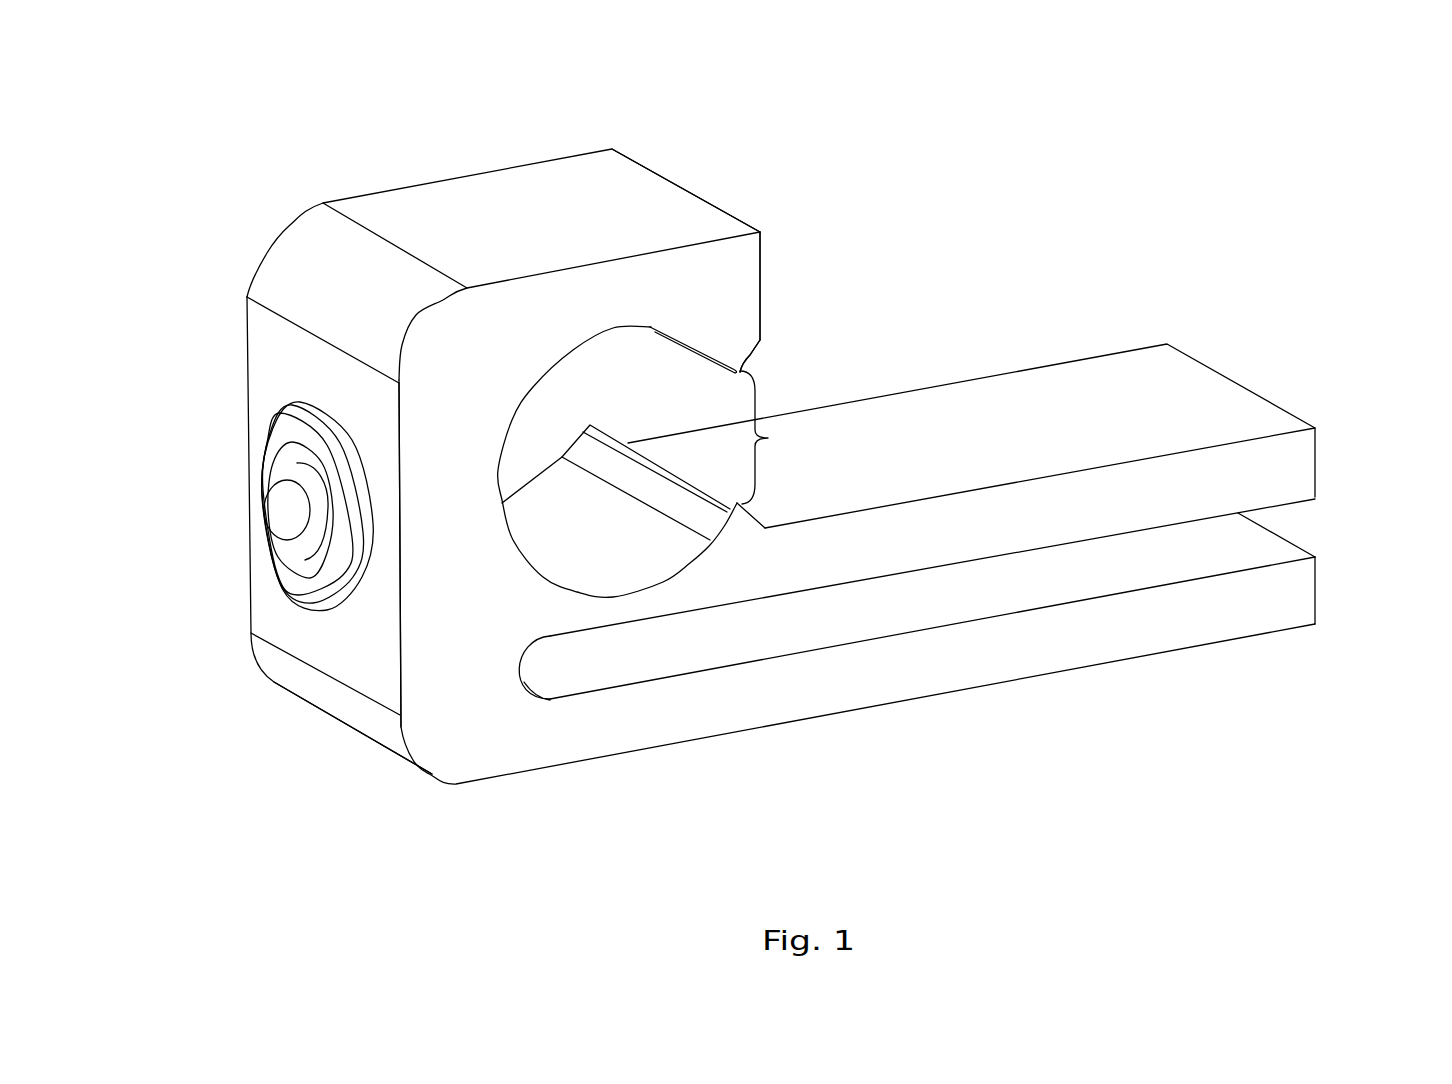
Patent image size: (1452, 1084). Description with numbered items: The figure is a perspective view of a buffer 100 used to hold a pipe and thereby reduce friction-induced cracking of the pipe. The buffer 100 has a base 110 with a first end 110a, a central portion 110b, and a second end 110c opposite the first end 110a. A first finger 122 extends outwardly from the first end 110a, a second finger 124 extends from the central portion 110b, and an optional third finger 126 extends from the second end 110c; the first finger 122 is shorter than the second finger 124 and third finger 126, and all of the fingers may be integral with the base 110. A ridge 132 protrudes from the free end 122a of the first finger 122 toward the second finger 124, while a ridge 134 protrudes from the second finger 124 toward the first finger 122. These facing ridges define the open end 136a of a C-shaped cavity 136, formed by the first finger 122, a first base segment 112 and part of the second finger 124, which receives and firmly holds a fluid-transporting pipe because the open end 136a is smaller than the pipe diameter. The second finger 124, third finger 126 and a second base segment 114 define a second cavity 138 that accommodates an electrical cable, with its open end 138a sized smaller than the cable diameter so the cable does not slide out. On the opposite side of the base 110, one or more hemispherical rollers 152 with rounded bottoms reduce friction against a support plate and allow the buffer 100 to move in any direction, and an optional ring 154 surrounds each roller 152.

The buffer 100 is at (195, 86).
The base 110 is at (447, 462).
The first end of the base 110a is at (457, 363).
The central portion of the base 110b is at (447, 535).
The second end of the base 110c is at (462, 722).
The first base segment 112 is at (498, 468).
The second base segment 114 is at (522, 663).
The first finger 122 is at (588, 293).
The free end of the first finger 122a is at (740, 272).
The second finger 124 is at (1277, 465).
The third finger 126 is at (1278, 600).
The ridge 132 is at (735, 363).
The ridge 134 is at (742, 521).
The cavity 136 is at (704, 372).
The open end of the cavity 136a is at (784, 437).
The cavity 138 is at (918, 614).
The open end of the cavity 138a is at (1305, 515).
The roller 152 is at (282, 510).
The ring 154 is at (285, 431).